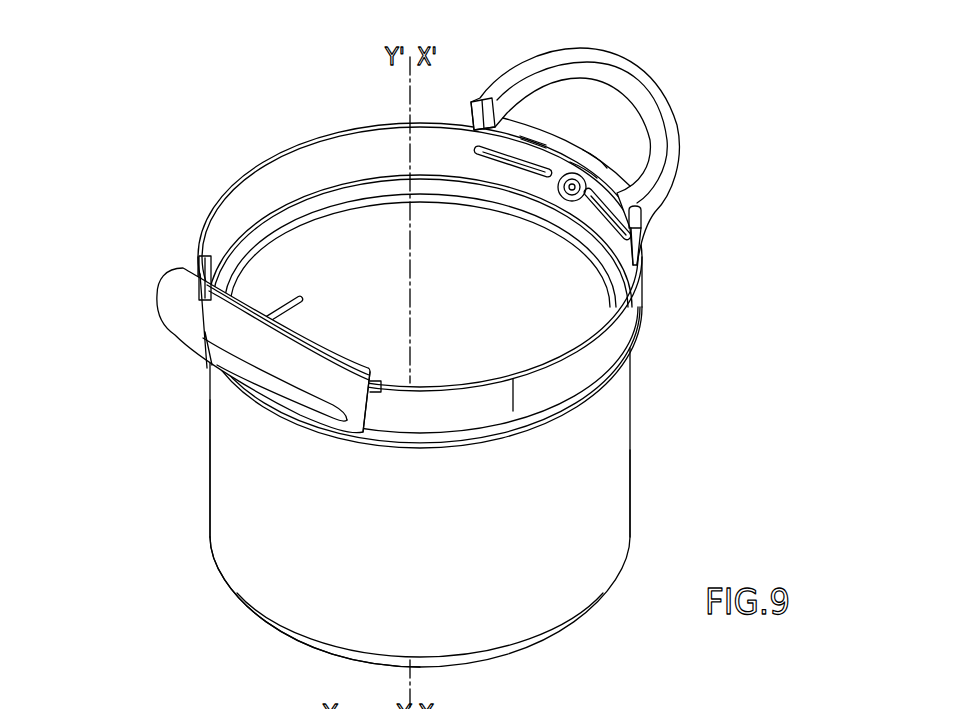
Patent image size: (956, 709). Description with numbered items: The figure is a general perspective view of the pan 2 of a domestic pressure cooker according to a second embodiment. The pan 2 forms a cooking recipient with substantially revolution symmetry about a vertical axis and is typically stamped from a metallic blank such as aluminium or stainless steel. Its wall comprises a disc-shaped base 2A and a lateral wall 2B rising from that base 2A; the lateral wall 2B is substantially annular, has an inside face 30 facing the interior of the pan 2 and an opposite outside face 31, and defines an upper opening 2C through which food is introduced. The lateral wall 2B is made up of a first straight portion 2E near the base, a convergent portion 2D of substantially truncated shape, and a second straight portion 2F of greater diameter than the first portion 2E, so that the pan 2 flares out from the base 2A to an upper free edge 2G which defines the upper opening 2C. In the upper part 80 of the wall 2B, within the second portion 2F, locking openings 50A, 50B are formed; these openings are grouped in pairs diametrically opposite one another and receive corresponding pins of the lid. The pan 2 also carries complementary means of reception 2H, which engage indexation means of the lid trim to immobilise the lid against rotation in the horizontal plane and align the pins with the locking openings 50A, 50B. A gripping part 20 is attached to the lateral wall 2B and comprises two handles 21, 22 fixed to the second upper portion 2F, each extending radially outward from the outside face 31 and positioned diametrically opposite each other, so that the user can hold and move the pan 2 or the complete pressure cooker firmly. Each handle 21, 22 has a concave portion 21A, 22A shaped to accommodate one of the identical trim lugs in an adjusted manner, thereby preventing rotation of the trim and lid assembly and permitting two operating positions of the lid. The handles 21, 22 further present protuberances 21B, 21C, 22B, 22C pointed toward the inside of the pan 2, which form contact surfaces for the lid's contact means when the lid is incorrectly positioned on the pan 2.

The pan 2 is at (150, 178).
The base 2A is at (512, 649).
The lateral wall 2B is at (620, 442).
The upper opening 2C is at (345, 152).
The convergent portion 2D is at (368, 440).
The first straight portion 2E is at (230, 440).
The second straight portion 2F is at (636, 300).
The upper free edge 2G is at (258, 170).
The means of reception 2H is at (221, 306).
The gripping part 20 is at (141, 284).
The handle 21 is at (173, 320).
The concave portion 21A is at (236, 310).
The protuberance 21B is at (368, 364).
The protuberance 21C is at (203, 255).
The handle 22 is at (655, 97).
The concave portion 22A is at (620, 156).
The protuberance 22B is at (472, 104).
The protuberance 22C is at (643, 224).
The inside face 30 is at (531, 243).
The outside face 31 is at (613, 503).
The locking opening 50A is at (607, 213).
The locking opening 50B is at (504, 164).
The upper part 80 is at (515, 378).